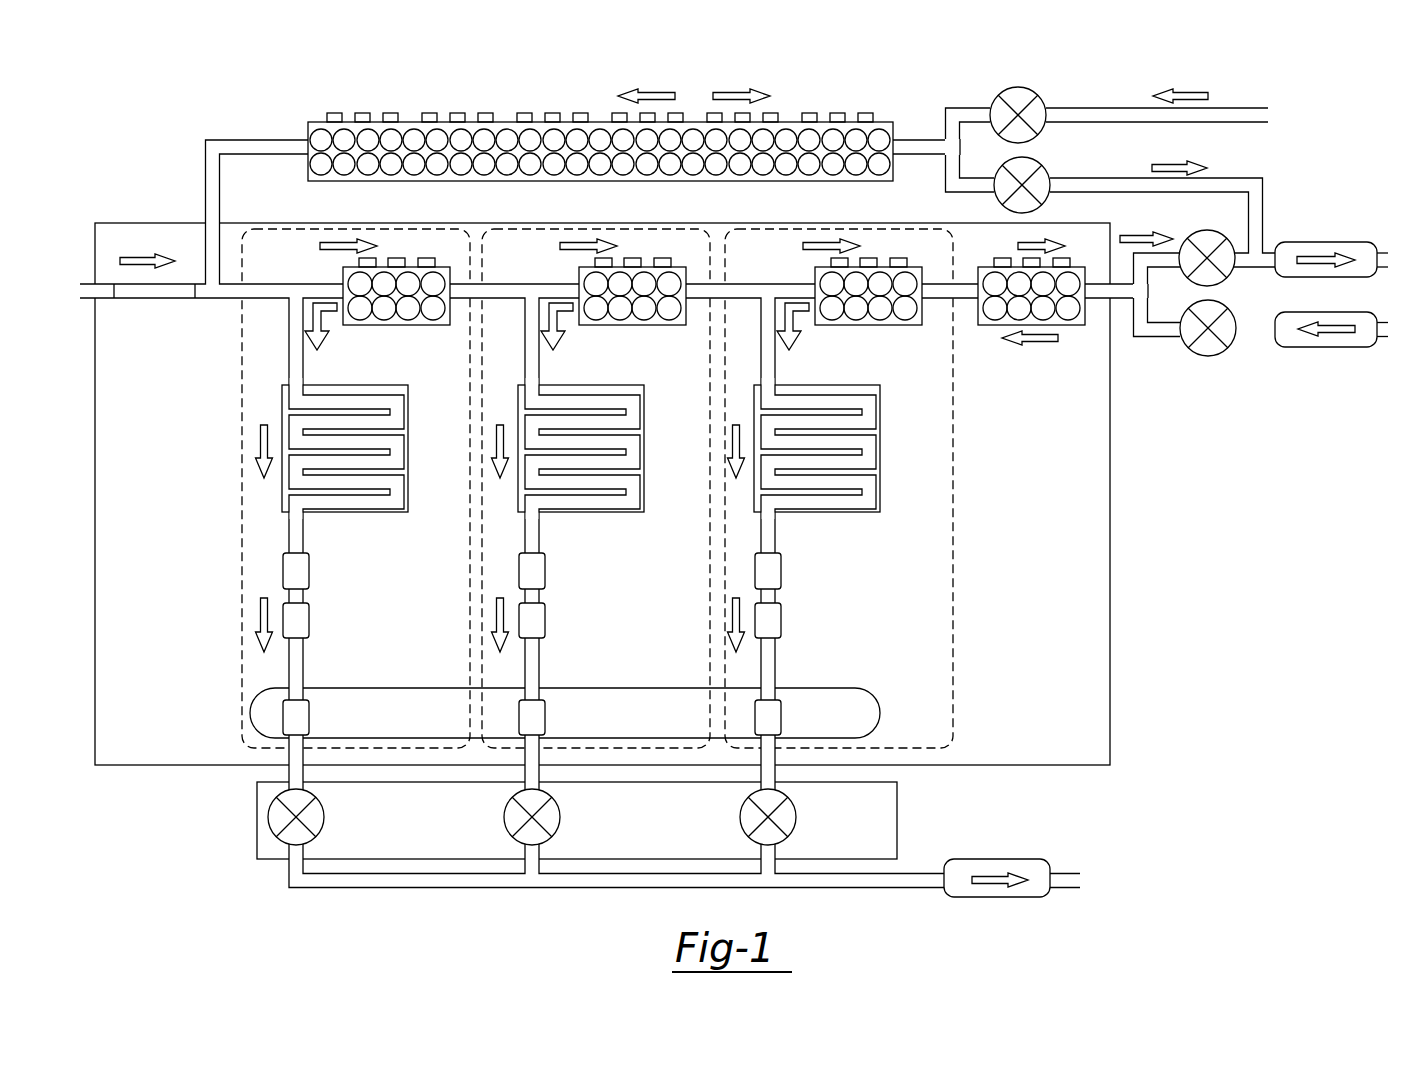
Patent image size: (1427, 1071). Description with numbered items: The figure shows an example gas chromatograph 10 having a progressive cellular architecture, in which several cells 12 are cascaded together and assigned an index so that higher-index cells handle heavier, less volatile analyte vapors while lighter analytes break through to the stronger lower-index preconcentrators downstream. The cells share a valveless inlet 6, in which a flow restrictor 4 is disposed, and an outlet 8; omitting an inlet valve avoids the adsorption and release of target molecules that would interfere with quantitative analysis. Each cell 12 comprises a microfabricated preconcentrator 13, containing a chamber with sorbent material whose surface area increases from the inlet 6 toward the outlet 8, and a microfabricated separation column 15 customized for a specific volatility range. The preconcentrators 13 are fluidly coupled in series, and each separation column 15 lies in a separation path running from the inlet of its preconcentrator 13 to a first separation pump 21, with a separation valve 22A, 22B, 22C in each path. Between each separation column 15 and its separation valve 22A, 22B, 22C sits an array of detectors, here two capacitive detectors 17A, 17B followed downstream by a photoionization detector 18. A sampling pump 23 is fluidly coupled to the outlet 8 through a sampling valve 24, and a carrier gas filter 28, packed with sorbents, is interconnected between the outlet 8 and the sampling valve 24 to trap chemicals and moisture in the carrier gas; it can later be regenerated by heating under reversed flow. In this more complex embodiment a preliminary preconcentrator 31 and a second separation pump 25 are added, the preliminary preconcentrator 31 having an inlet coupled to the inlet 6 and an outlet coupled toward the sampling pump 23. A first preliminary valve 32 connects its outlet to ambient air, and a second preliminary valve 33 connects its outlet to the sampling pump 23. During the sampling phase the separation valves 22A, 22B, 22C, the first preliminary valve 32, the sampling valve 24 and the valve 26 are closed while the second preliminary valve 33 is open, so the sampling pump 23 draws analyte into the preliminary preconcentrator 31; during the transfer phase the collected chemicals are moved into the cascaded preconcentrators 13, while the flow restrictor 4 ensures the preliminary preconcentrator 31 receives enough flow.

The gas chromatograph 10 is at (218, 118).
The flow restrictor 4 is at (157, 293).
The inlet 6 is at (215, 300).
The outlet 8 is at (953, 278).
The cell 12 is at (650, 229).
The microfabricated preconcentrator 13 is at (400, 258).
The microfabricated separation column 15 is at (366, 385).
The capacitive detector 17A is at (283, 578).
The capacitive detector 17B is at (310, 624).
The photoionization detector 18 is at (283, 712).
The first separation pump 21 is at (978, 897).
The separation valve 22A is at (268, 803).
The separation valve 22B is at (503, 816).
The separation valve 22C is at (740, 817).
The sampling pump 23 is at (1365, 242).
The sampling valve 24 is at (1220, 234).
The second separation pump 25 is at (1343, 347).
The valve 26 is at (1205, 352).
The carrier gas filter 28 is at (1072, 326).
The preliminary preconcentrator 31 is at (817, 112).
The first preliminary valve 32 is at (1000, 93).
The second preliminary valve 33 is at (1048, 170).